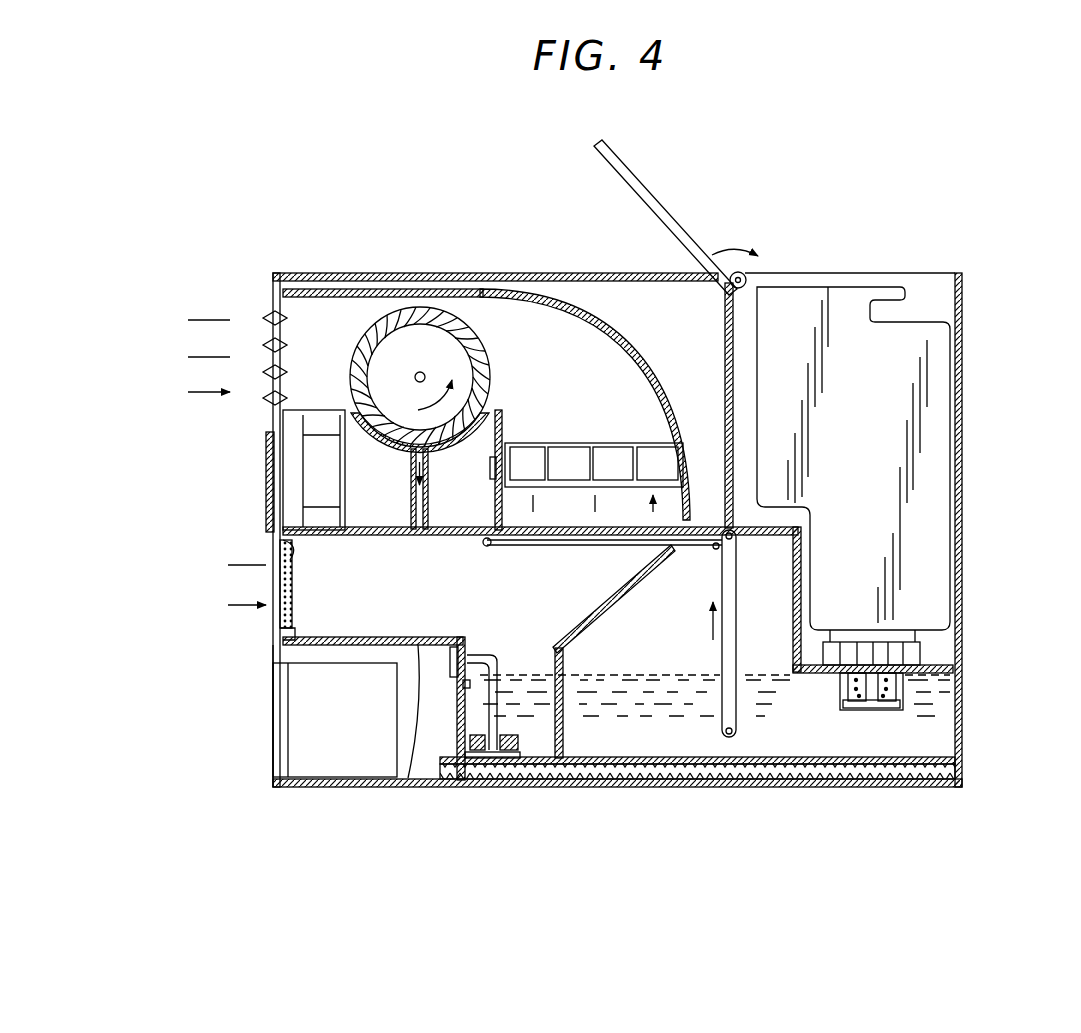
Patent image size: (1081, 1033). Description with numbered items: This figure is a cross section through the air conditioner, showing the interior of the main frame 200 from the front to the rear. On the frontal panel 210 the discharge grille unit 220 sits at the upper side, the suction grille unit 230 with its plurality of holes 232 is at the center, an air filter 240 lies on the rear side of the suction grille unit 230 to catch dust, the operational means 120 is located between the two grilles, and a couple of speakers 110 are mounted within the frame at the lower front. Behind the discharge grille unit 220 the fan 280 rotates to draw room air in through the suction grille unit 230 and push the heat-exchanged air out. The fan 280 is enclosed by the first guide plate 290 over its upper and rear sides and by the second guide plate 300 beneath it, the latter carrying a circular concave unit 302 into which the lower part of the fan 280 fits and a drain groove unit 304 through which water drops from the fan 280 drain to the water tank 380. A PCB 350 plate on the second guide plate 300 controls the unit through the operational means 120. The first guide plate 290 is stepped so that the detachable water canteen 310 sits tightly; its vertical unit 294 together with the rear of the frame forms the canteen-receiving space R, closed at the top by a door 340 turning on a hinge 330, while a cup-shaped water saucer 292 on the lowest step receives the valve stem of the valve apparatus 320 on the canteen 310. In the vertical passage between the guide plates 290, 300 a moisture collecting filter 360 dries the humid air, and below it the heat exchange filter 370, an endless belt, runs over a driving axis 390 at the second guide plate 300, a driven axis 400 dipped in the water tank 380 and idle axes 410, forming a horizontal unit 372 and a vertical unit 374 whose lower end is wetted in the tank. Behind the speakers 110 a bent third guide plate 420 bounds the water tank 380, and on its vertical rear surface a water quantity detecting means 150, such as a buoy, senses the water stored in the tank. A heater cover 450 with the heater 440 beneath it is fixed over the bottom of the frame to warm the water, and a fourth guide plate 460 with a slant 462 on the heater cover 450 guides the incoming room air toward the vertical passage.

The speakers 110 is at (305, 713).
The operational means 120 is at (268, 455).
The pump 150 is at (520, 788).
The main frame 200 is at (897, 262).
The frontal panel 210 is at (276, 658).
The discharge grille unit 220 is at (268, 330).
The suction grille unit 230 is at (283, 578).
The holes 232 is at (283, 625).
The air filter 240 is at (280, 540).
The fan 280 is at (471, 326).
The first guide plate 290 is at (367, 276).
The water saucer 292 is at (893, 718).
The vertical unit 294 is at (737, 330).
The second guide plate 300 is at (303, 276).
The circular concave unit 302 is at (488, 406).
The drain groove unit 304 is at (415, 537).
The detachable water canteen 310 is at (935, 392).
The valve apparatus 320 is at (920, 650).
The hinge 330 is at (738, 272).
The door 340 is at (638, 185).
The printed circuit board (PCB) plate 350 is at (285, 483).
The moisture collecting filter 360 is at (616, 457).
The heat exchange filter 370 is at (744, 573).
The horizontal unit 372 is at (555, 523).
The vertical unit 374 is at (740, 668).
The water tank 380 is at (940, 735).
The driving axis 390 is at (490, 547).
The driven axis 400 is at (757, 788).
The idle axes 410 is at (710, 548).
The third guide plate 420 is at (415, 788).
The heater 440 is at (610, 788).
The heater cover 450 is at (852, 788).
The fourth guide plate 460 is at (565, 663).
The slant 462 is at (600, 615).
The canteen-receiving space R is at (948, 297).